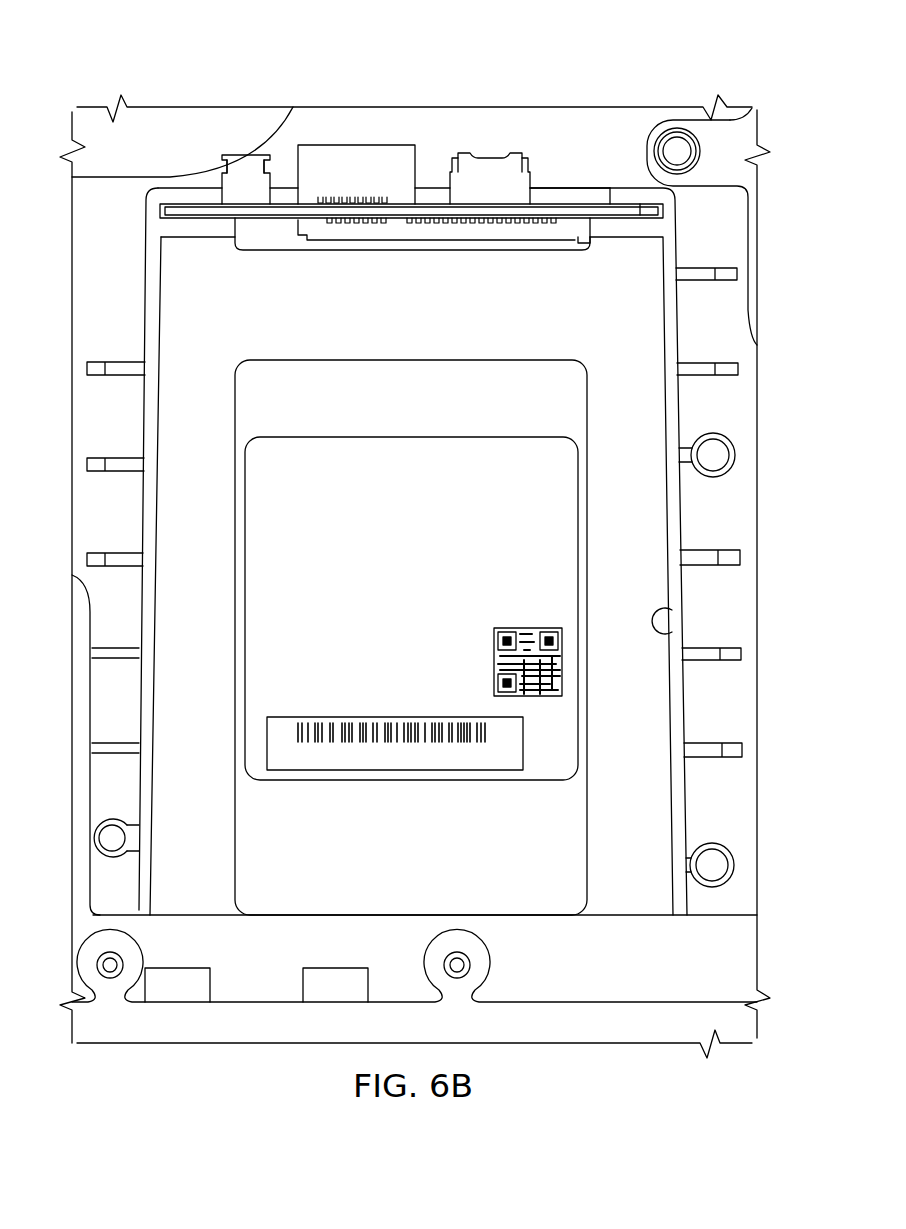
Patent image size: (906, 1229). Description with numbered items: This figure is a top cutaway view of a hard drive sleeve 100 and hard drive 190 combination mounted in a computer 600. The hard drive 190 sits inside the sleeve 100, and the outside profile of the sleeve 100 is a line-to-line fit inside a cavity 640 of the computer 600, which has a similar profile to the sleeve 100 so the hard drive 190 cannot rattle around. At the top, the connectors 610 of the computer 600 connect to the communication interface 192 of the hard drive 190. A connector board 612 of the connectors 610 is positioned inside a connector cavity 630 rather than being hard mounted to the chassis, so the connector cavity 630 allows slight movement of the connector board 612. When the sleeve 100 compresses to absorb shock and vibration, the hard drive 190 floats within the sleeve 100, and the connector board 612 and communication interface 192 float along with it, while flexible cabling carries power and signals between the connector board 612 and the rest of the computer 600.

The computer 600 is at (328, 72).
The connectors 610 is at (507, 132).
The connector board 612 is at (568, 212).
The connector cavity 630 is at (652, 209).
The communication interface 192 is at (495, 234).
The hard drive sleeve 100 is at (148, 341).
The cavity 640 is at (672, 632).
The hard drive 190 is at (431, 863).